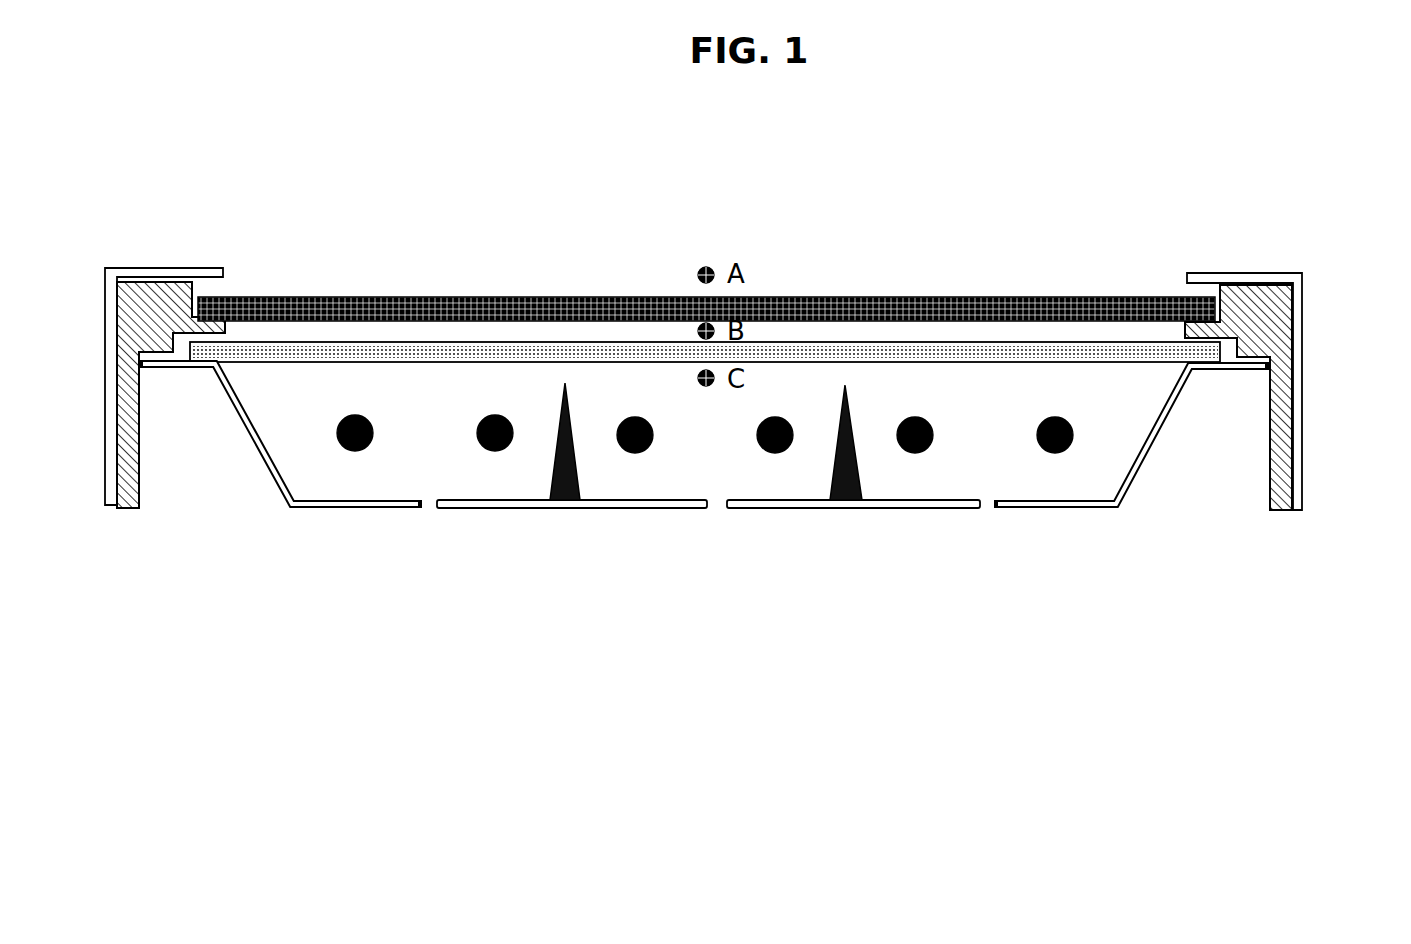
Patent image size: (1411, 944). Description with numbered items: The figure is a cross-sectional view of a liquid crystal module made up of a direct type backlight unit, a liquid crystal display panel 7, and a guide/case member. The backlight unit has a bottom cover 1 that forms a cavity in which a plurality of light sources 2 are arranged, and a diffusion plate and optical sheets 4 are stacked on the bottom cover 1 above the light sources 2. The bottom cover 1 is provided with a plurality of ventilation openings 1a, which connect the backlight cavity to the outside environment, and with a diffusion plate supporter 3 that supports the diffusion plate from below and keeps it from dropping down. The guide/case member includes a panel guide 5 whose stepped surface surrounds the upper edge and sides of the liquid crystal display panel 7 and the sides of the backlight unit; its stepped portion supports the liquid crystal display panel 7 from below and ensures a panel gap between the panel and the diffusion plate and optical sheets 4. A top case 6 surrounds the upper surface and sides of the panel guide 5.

The bottom cover 1 is at (1155, 437).
The ventilation openings 1a is at (718, 510).
The light sources 2 is at (1055, 452).
The diffusion plate supporter 3 is at (840, 500).
The diffusion plate and optical sheets 4 is at (953, 352).
The panel guide 5 is at (1264, 300).
The top case 6 is at (1297, 385).
The liquid crystal display panel 7 is at (1081, 298).